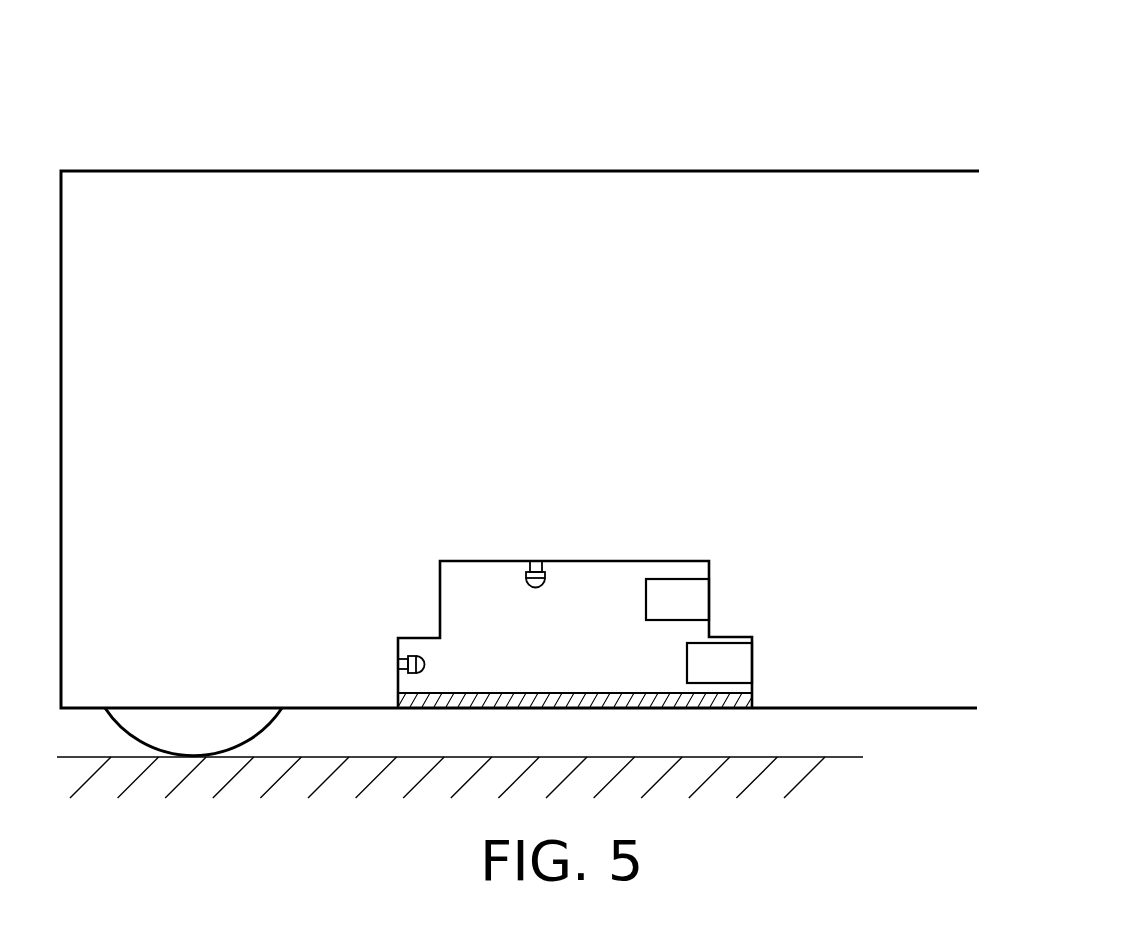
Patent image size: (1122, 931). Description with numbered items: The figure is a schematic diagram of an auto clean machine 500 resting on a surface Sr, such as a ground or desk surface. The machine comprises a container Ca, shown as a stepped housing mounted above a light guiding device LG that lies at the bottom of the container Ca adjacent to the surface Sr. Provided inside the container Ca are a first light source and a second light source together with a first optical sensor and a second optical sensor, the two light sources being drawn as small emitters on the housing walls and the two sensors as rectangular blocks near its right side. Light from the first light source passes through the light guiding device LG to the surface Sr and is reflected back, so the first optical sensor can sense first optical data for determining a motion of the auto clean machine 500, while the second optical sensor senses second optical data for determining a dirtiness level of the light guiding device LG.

The auto clean machine 500 is at (1012, 112).
The surface Sr is at (852, 784).
The container Ca is at (640, 560).
The light guiding device LG is at (713, 710).